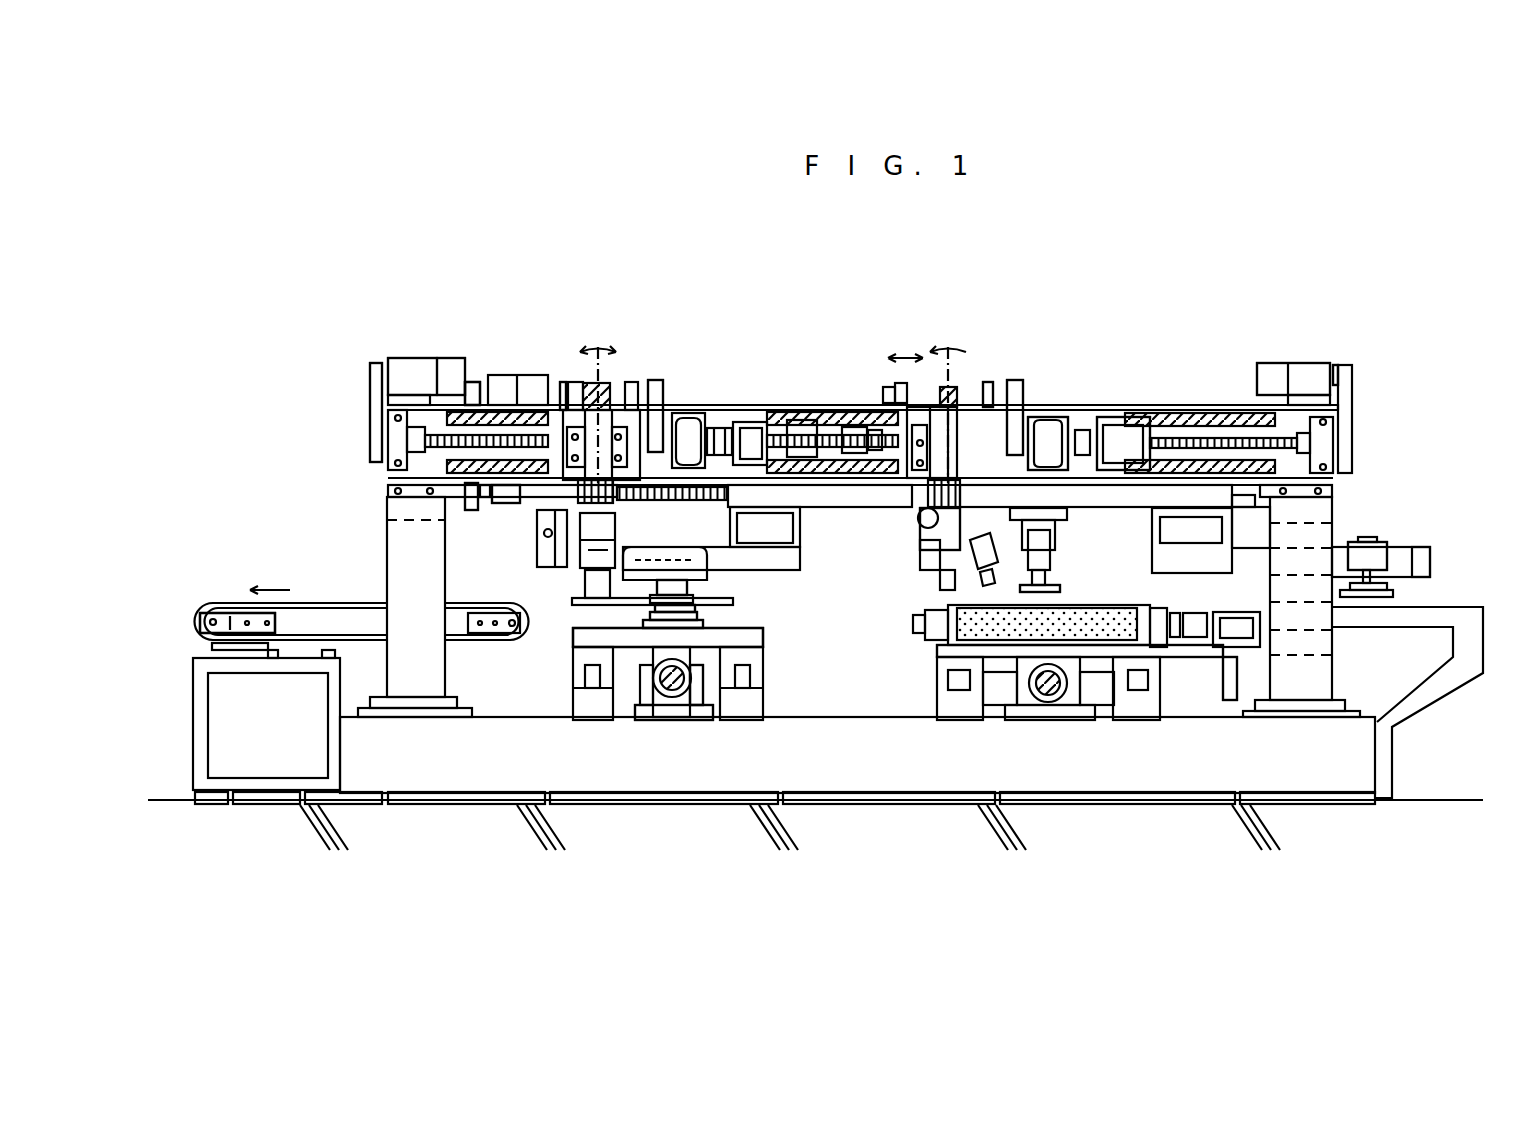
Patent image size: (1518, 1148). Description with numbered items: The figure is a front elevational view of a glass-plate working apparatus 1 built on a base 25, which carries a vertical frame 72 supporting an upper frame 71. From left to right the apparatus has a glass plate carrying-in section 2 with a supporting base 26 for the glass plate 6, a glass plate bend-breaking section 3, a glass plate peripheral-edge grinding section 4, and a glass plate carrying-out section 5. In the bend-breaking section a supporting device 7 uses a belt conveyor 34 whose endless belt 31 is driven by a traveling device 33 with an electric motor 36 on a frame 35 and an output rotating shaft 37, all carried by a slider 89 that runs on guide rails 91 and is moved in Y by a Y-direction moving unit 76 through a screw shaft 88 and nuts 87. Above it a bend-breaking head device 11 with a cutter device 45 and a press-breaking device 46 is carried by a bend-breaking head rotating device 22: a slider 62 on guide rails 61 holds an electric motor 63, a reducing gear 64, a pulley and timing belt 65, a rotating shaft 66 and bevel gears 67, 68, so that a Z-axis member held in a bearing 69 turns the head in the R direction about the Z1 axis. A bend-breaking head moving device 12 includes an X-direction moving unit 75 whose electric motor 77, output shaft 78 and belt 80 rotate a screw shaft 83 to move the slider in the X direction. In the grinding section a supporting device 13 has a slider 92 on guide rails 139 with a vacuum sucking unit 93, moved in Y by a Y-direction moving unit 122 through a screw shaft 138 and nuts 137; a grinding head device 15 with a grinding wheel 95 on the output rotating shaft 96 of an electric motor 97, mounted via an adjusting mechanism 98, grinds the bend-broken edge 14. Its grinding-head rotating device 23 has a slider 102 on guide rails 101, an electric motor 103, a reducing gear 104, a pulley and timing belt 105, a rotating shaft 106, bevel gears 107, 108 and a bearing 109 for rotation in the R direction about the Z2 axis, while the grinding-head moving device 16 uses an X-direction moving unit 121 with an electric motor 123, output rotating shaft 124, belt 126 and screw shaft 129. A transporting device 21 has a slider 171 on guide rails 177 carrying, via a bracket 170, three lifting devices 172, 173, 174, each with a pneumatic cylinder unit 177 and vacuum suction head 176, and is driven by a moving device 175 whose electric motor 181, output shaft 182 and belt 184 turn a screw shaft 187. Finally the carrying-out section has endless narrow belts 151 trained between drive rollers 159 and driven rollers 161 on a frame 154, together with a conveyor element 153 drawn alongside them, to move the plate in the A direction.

The glass-plate working apparatus 1 is at (1178, 377).
The glass plate carrying-in section 2 is at (1388, 517).
The glass plate bend-breaking section 3 is at (897, 643).
The glass plate peripheral-edge grinding section 4 is at (563, 648).
The glass plate carrying-out section 5 is at (317, 556).
The glass plate 6 is at (1103, 608).
The supporting device 7 is at (1140, 603).
The bend-breaking head device 11 is at (915, 568).
The bend-breaking head moving device 12 is at (1013, 725).
The supporting device 13 is at (777, 630).
The bend-broken edge 14 is at (740, 605).
The grinding head device 15 is at (577, 573).
The grinding-head moving device 16 is at (687, 727).
The transporting device 21 is at (527, 360).
The bend-breaking head rotating device 22 is at (1093, 400).
The grinding-head rotating device 23 is at (738, 402).
The base 25 is at (1325, 788).
The supporting base 26 is at (1463, 614).
The endless belt 31 is at (940, 650).
The traveling device 33 is at (1207, 667).
The belt conveyor 34 is at (905, 628).
The frame 35 is at (1223, 662).
The electric motor 36 is at (1243, 620).
The output rotating shaft 37 is at (1205, 620).
The cutter device 45 is at (940, 552).
The press-breaking device 46 is at (978, 552).
The guide rails 61 is at (1217, 417).
The slider 62 is at (1080, 417).
The electric motor 63 is at (1117, 433).
The reducing gear 64 is at (1050, 420).
The pulley and timing belt 65 is at (1017, 380).
The rotating shaft 66 is at (1008, 395).
The bevel gear 67 is at (937, 373).
The bevel gear 68 is at (898, 397).
The bearing 69 is at (918, 505).
The upper frame 71 is at (1157, 413).
The vertical frame 72 is at (1327, 668).
The X-direction moving unit 75 is at (1357, 377).
The Y-direction moving unit 76 is at (1077, 723).
The electric motor 77 is at (1300, 365).
The output shaft 78 is at (1340, 370).
The belt 80 is at (1350, 410).
The screw shaft 83 is at (1233, 417).
The nuts 87 is at (1073, 663).
The screw shaft 88 is at (1050, 695).
The slider 89 is at (998, 653).
The guide rails 91 is at (1147, 680).
The slider 92 is at (763, 640).
The vacuum sucking unit 93 is at (643, 618).
The grinding wheel 95 is at (577, 632).
The output rotating shaft 96 is at (647, 572).
The electric motor 97 is at (572, 602).
The adjusting mechanism 98 is at (537, 552).
The guide rails 101 is at (817, 423).
The slider 102 is at (688, 420).
The electric motor 103 is at (733, 413).
The reducing gear 104 is at (690, 413).
The pulley and timing belt 105 is at (620, 378).
The rotating shaft 106 is at (605, 385).
The bevel gear 107 is at (562, 382).
The bevel gear 108 is at (612, 380).
The bearing 109 is at (545, 500).
The X-direction moving unit 121 is at (363, 370).
The Y-direction moving unit 122 is at (640, 723).
The electric motor 123 is at (427, 362).
The output rotating shaft 124 is at (382, 370).
The belt 126 is at (370, 403).
The screw shaft 129 is at (445, 448).
The nuts 137 is at (693, 700).
The screw shaft 138 is at (673, 695).
The guide rails 139 is at (753, 680).
The endless narrow belts 151 is at (236, 600).
The conveyor belt 153 is at (343, 603).
The frame 154 is at (198, 757).
The drive rollers 159 is at (213, 608).
The driven rollers 161 is at (507, 635).
The bracket 170 is at (1152, 563).
The slider 171 is at (843, 500).
The lifting device 172 is at (1387, 520).
The lifting device 173 is at (1013, 577).
The lifting device 174 is at (653, 545).
The moving device 175 is at (467, 512).
The vacuum suction head 176 is at (1060, 588).
The pneumatic cylinder unit 177 is at (700, 570).
The electric motor 181 is at (507, 377).
The output shaft 182 is at (483, 383).
The belt 184 is at (473, 377).
The screw shaft 187 is at (700, 500).
The A direction A is at (270, 576).
The X direction X is at (905, 341).
The R direction R is at (790, 323).
The Z1 axis Z1 is at (929, 387).
The Z2 axis Z2 is at (585, 328).